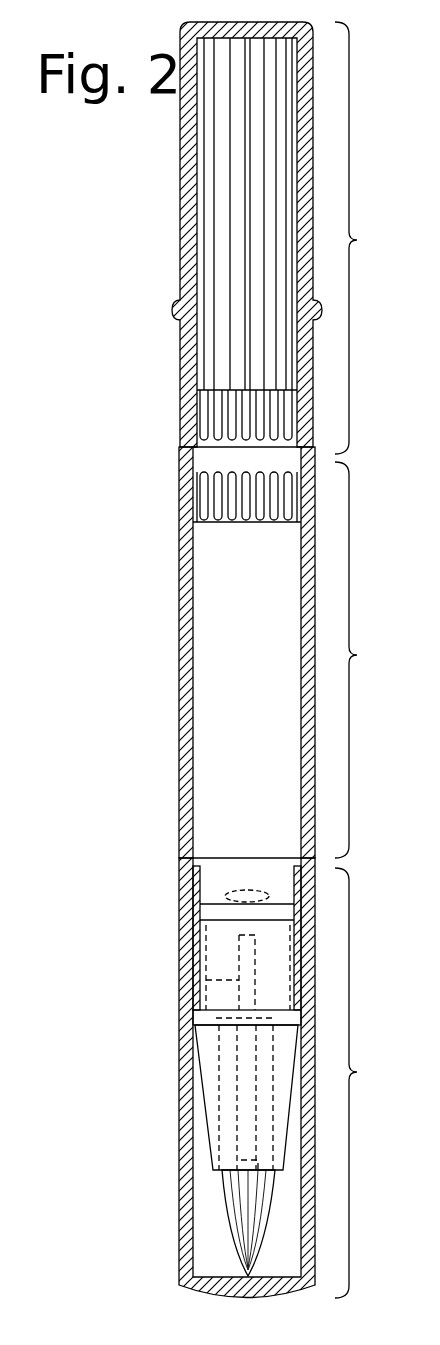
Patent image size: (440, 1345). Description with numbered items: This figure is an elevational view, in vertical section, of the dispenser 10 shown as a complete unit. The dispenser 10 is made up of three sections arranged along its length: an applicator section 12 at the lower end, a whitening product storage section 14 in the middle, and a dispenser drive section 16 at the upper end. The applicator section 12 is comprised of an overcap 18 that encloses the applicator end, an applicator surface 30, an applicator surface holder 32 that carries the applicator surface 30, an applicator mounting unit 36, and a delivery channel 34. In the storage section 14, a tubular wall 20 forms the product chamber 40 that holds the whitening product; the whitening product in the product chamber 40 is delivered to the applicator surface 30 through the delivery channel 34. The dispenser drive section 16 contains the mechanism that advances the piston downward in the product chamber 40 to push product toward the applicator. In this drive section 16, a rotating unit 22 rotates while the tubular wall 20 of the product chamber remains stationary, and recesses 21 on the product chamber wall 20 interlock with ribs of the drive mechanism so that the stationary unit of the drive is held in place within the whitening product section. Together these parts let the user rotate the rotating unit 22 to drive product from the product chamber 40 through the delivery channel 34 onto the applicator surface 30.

The dispenser 10 is at (177, 668).
The applicator section 12 is at (234, 1078).
The whitening product storage section 14 is at (224, 652).
The dispenser drive section 16 is at (241, 238).
The overcap 18 is at (185, 1240).
The tubular wall 20 is at (179, 601).
The recesses 21 is at (215, 426).
The rotating unit 22 is at (181, 178).
The applicator surface 30 is at (233, 1203).
The applicator surface holder 32 is at (213, 1100).
The delivery channel 34 is at (206, 980).
The applicator mounting unit 36 is at (215, 953).
The product chamber 40 is at (230, 742).